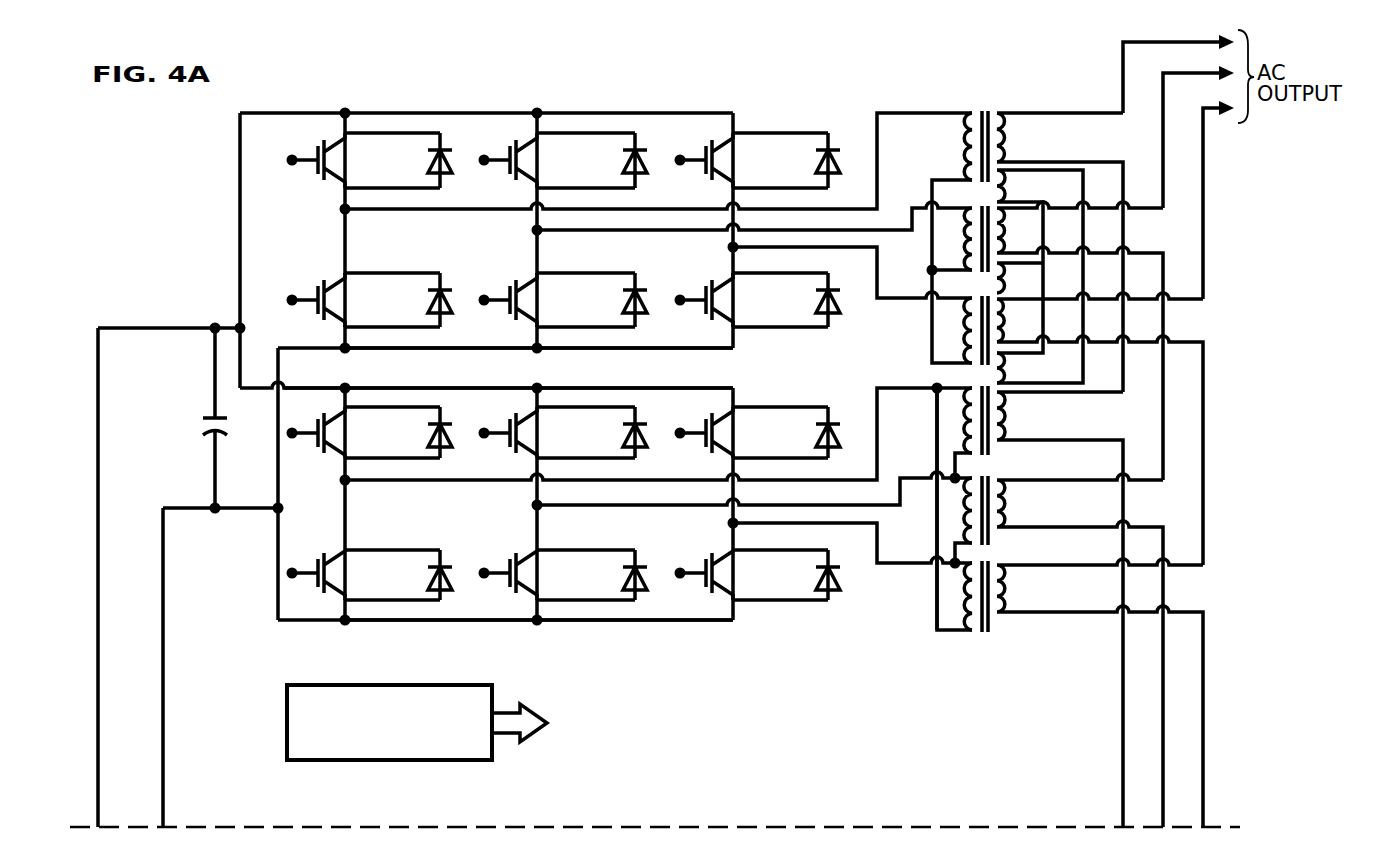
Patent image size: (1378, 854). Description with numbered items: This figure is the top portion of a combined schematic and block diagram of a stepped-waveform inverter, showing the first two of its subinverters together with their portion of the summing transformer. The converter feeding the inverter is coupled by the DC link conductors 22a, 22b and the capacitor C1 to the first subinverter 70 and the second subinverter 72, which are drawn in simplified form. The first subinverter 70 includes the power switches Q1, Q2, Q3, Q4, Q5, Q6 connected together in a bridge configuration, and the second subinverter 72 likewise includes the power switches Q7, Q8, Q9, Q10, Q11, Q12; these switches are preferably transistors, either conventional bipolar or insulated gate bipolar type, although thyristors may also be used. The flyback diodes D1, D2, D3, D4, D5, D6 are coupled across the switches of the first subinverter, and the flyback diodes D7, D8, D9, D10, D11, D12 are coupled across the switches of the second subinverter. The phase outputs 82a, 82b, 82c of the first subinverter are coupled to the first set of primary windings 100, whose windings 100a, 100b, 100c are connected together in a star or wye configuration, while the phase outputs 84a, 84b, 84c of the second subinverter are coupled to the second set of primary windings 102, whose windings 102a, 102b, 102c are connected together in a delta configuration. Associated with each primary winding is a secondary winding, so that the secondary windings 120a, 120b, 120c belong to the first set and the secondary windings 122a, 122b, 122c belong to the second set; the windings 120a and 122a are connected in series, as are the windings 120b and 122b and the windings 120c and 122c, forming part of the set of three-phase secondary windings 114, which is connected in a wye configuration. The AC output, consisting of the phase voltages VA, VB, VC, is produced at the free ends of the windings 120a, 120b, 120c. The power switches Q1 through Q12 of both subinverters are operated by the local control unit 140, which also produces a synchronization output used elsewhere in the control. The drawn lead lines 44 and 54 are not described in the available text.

The power switch Q1 is at (332, 132).
The power switch Q2 is at (332, 275).
The power switch Q3 is at (527, 132).
The power switch Q4 is at (515, 305).
The power switch Q5 is at (722, 132).
The power switch Q6 is at (710, 305).
The power switch Q7 is at (335, 410).
The power switch Q8 is at (335, 572).
The power switch Q9 is at (527, 410).
The power switch Q10 is at (520, 553).
The power switch Q11 is at (725, 410).
The power switch Q12 is at (730, 556).
The flyback diode D1 is at (450, 155).
The flyback diode D2 is at (445, 298).
The flyback diode D3 is at (640, 155).
The flyback diode D4 is at (625, 300).
The flyback diode D5 is at (838, 155).
The flyback diode D6 is at (818, 300).
The flyback diode D7 is at (445, 432).
The flyback diode D8 is at (435, 575).
The flyback diode D9 is at (638, 432).
The flyback diode D10 is at (628, 573).
The flyback diode D11 is at (832, 428).
The flyback diode D12 is at (840, 575).
The phase output 82a is at (340, 210).
The phase output 82b is at (533, 230).
The phase output 82c is at (728, 247).
The phase output 84a is at (350, 482).
The phase output 84b is at (533, 505).
The phase output 84c is at (729, 523).
The first subinverter 70 is at (612, 350).
The second subinverter 72 is at (455, 386).
The second subinverter 44 is at (662, 633).
The DC link conductor 22a is at (185, 328).
The DC link conductor 22b is at (185, 508).
The capacitor C1 is at (206, 420).
The first set of primary windings 100 is at (937, 100).
The set of three-phase secondary windings 114 is at (987, 100).
The primary winding 100a is at (968, 140).
The primary winding 100b is at (968, 245).
The primary winding 100c is at (968, 315).
The second set of primary windings 102 is at (904, 374).
The primary winding 102a is at (968, 415).
The primary winding 102b is at (968, 525).
The primary winding 102c is at (972, 615).
The neutral connection 54 is at (915, 594).
The secondary winding 120a is at (1005, 138).
The secondary winding 120b is at (1005, 228).
The secondary winding 120c is at (1005, 320).
The secondary winding 122a is at (1005, 415).
The secondary winding 122b is at (1005, 503).
The secondary winding 122c is at (1005, 588).
The phase voltage VA is at (1122, 42).
The phase voltage VB is at (1162, 73).
The phase voltage VC is at (1213, 112).
The local control unit 140 is at (287, 728).